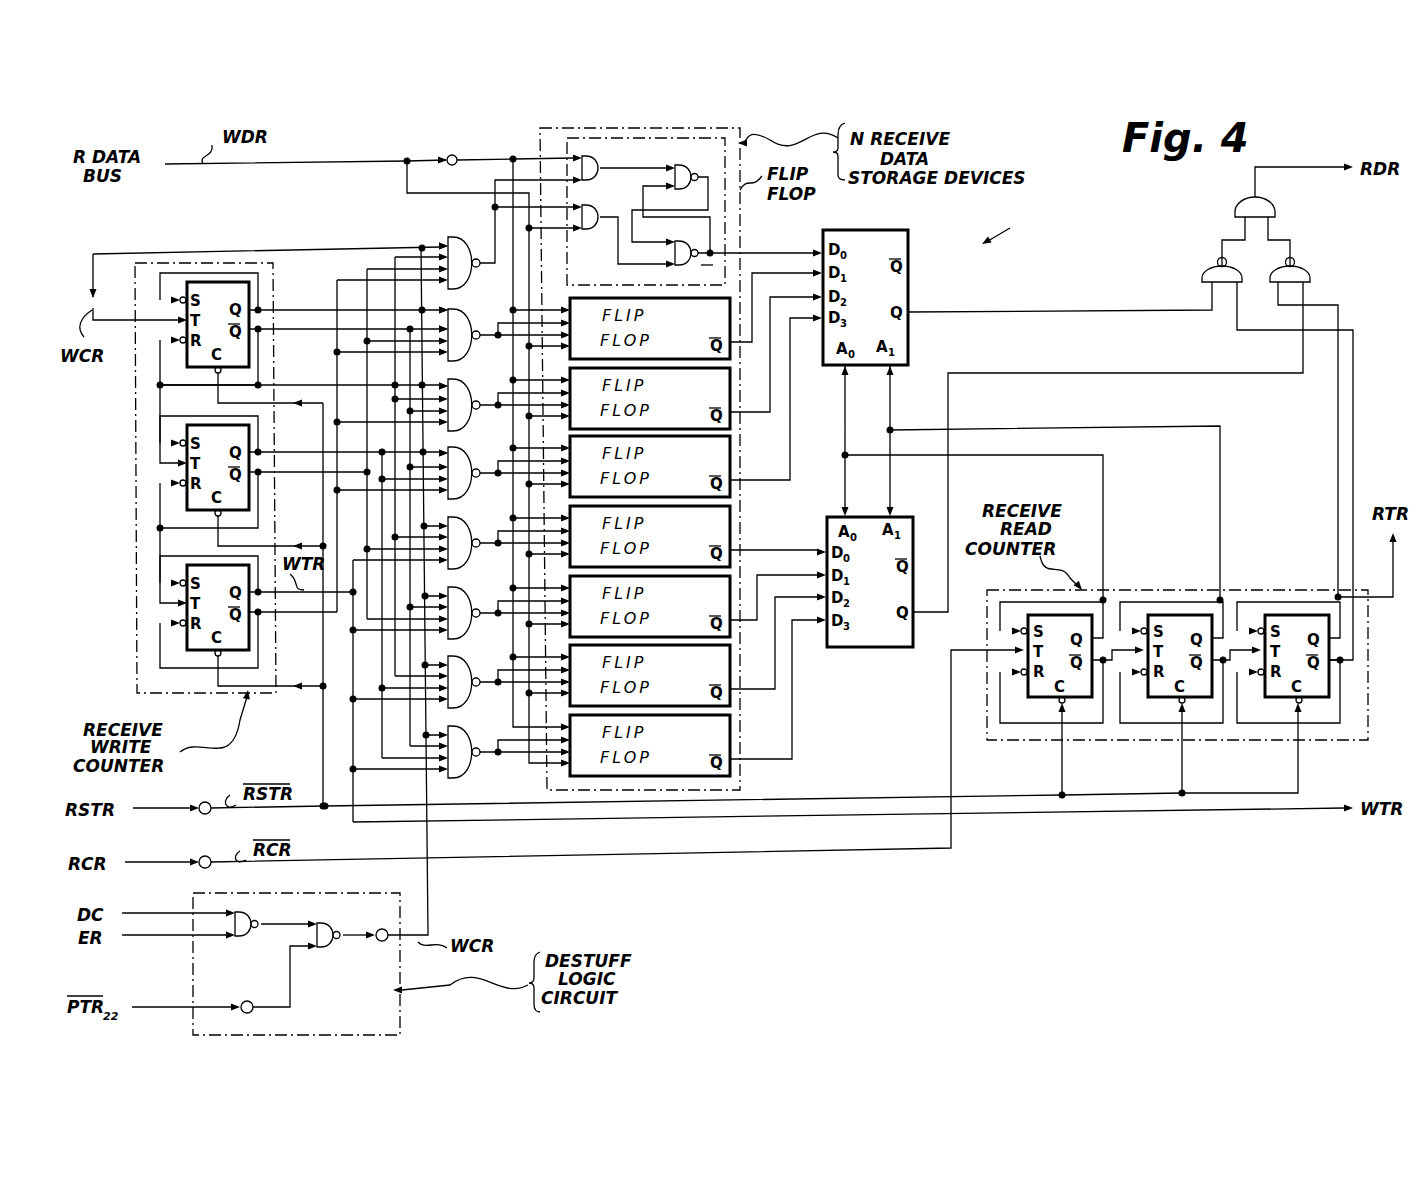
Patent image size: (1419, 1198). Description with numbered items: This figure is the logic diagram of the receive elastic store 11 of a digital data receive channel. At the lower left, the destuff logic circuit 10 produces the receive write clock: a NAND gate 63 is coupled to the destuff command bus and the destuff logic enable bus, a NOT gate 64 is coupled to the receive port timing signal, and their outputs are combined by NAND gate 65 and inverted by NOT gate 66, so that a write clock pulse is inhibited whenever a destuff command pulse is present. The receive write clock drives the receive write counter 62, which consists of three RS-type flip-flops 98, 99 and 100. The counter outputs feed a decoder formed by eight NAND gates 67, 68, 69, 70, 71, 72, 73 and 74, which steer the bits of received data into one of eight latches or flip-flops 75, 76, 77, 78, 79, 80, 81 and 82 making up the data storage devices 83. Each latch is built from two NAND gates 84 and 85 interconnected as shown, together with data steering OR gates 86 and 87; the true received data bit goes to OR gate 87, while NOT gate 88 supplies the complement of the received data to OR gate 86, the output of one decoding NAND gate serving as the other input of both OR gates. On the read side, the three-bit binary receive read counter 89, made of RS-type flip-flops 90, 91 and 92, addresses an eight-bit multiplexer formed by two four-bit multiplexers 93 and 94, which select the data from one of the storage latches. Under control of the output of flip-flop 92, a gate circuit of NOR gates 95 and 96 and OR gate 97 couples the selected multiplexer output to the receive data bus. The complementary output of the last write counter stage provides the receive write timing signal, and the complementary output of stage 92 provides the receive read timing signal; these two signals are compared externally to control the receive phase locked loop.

The destuff logic circuit 10 is at (400, 1028).
The receive elastic store 11 is at (1011, 226).
The receive write counter 62 is at (137, 640).
The NAND gate 63 is at (250, 916).
The NOT gate 64 is at (250, 1000).
The NAND gate 65 is at (325, 926).
The NOT gate 66 is at (382, 928).
The NAND gate 67 is at (463, 243).
The NAND gate 68 is at (465, 317).
The NAND gate 69 is at (465, 387).
The NAND gate 70 is at (463, 455).
The NAND gate 71 is at (463, 529).
The NAND gate 72 is at (463, 599).
The NAND gate 73 is at (463, 668).
The NAND gate 74 is at (465, 738).
The flip-flop 75 is at (726, 213).
The flip-flop 76 is at (738, 347).
The flip-flop 77 is at (740, 415).
The flip-flop 78 is at (732, 455).
The flip-flop 79 is at (736, 527).
The flip-flop 80 is at (740, 628).
The flip-flop 81 is at (738, 696).
The flip-flop 82 is at (732, 737).
The data storage devices 83 is at (742, 497).
The NAND gate 84 is at (679, 168).
The NAND gate 85 is at (733, 244).
The OR gate 86 is at (592, 162).
The OR gate 87 is at (593, 206).
The NOT gate 88 is at (458, 156).
The receive read counter 89 is at (1368, 722).
The RS-type flip-flop 90 is at (1040, 684).
The RS-type flip-flop 91 is at (1158, 684).
The RS-type flip-flop 92 is at (1275, 684).
The four-bit multiplexer 93 is at (910, 270).
The four-bit multiplexer 94 is at (882, 636).
The NOR gate 95 is at (1207, 273).
The NOR gate 96 is at (1304, 273).
The OR gate 97 is at (1275, 211).
The RS-type flip-flop 98 is at (250, 323).
The RS-type flip-flop 99 is at (249, 498).
The RS-type flip-flop 100 is at (250, 638).